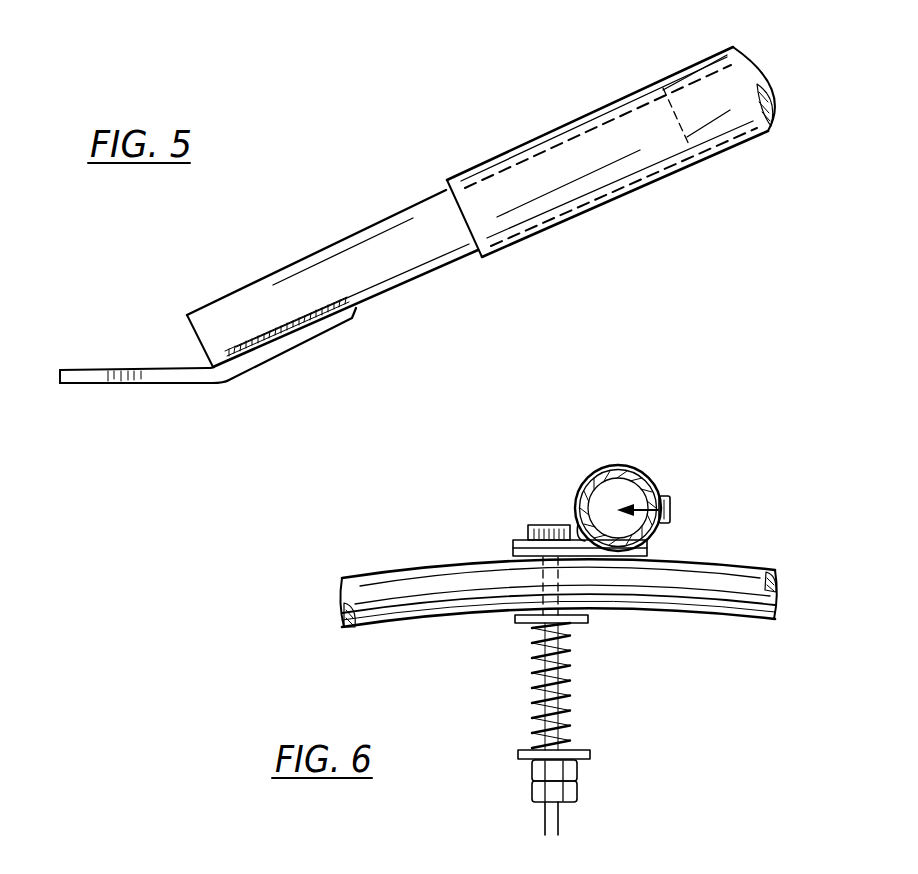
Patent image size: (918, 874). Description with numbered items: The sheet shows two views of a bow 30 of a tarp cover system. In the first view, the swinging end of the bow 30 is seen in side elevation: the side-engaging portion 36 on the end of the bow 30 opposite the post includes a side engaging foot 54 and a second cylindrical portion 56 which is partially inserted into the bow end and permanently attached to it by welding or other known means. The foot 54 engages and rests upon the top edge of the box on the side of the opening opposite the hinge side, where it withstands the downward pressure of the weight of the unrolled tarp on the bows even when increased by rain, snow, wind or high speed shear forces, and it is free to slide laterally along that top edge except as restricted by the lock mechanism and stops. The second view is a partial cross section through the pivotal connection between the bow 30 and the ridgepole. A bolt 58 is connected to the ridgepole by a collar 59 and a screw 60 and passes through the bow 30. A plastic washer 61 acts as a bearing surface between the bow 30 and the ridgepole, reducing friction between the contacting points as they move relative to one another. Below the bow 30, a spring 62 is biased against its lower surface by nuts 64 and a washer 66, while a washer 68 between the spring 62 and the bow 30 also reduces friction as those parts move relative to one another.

In FIG. 5, the bow 30 is at (720, 130).
In FIG. 6, the bow 30 is at (692, 592).
In FIG. 5, the side-engaging portion 36 is at (130, 282).
In FIG. 5, the side engaging foot 54 is at (93, 380).
In FIG. 5, the second cylindrical portion 56 is at (408, 252).
In FIG. 6, the bolt 58 is at (541, 524).
In FIG. 6, the collar 59 is at (643, 472).
In FIG. 6, the screw 60 is at (670, 503).
In FIG. 6, the plastic washer 61 is at (513, 547).
In FIG. 6, the spring 62 is at (537, 665).
In FIG. 6, the nuts 64 is at (577, 793).
In FIG. 6, the washer 66 is at (522, 762).
In FIG. 6, the washer 68 is at (588, 620).